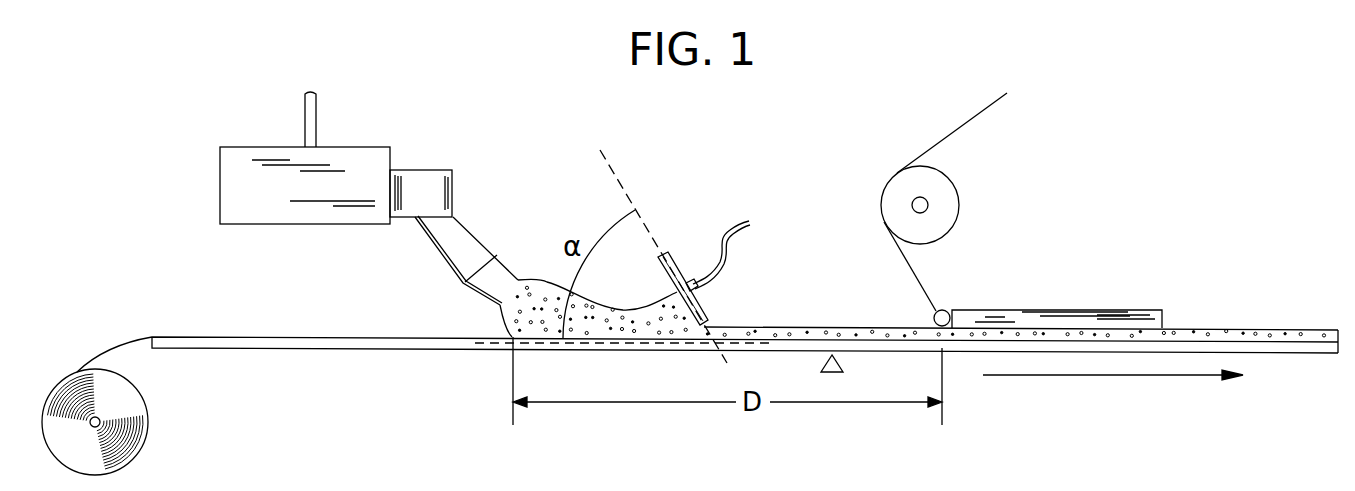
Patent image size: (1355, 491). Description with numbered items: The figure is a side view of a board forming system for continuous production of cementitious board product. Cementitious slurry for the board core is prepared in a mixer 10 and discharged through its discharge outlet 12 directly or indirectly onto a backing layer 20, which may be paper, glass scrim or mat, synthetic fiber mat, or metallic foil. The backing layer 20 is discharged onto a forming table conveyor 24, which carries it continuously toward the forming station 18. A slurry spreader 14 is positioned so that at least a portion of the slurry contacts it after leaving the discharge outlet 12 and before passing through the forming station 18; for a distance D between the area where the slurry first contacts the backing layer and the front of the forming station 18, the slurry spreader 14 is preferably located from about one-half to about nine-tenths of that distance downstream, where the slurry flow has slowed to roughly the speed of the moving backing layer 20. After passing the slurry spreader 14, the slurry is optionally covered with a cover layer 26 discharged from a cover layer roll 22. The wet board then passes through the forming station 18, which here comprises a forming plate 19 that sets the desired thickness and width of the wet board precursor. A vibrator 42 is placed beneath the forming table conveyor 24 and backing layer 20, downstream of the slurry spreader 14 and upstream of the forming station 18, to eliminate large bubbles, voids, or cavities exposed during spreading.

The mixer 10 is at (265, 215).
The discharge outlet 12 is at (490, 228).
The slurry spreader 14 is at (670, 254).
The forming station 18 is at (1007, 280).
The forming plate 19 is at (1097, 322).
The backing layer 20 is at (303, 337).
The cover layer roll 22 is at (930, 185).
The conveyor 24 is at (225, 341).
The cover layer 26 is at (910, 277).
The vibrator 42 is at (832, 372).